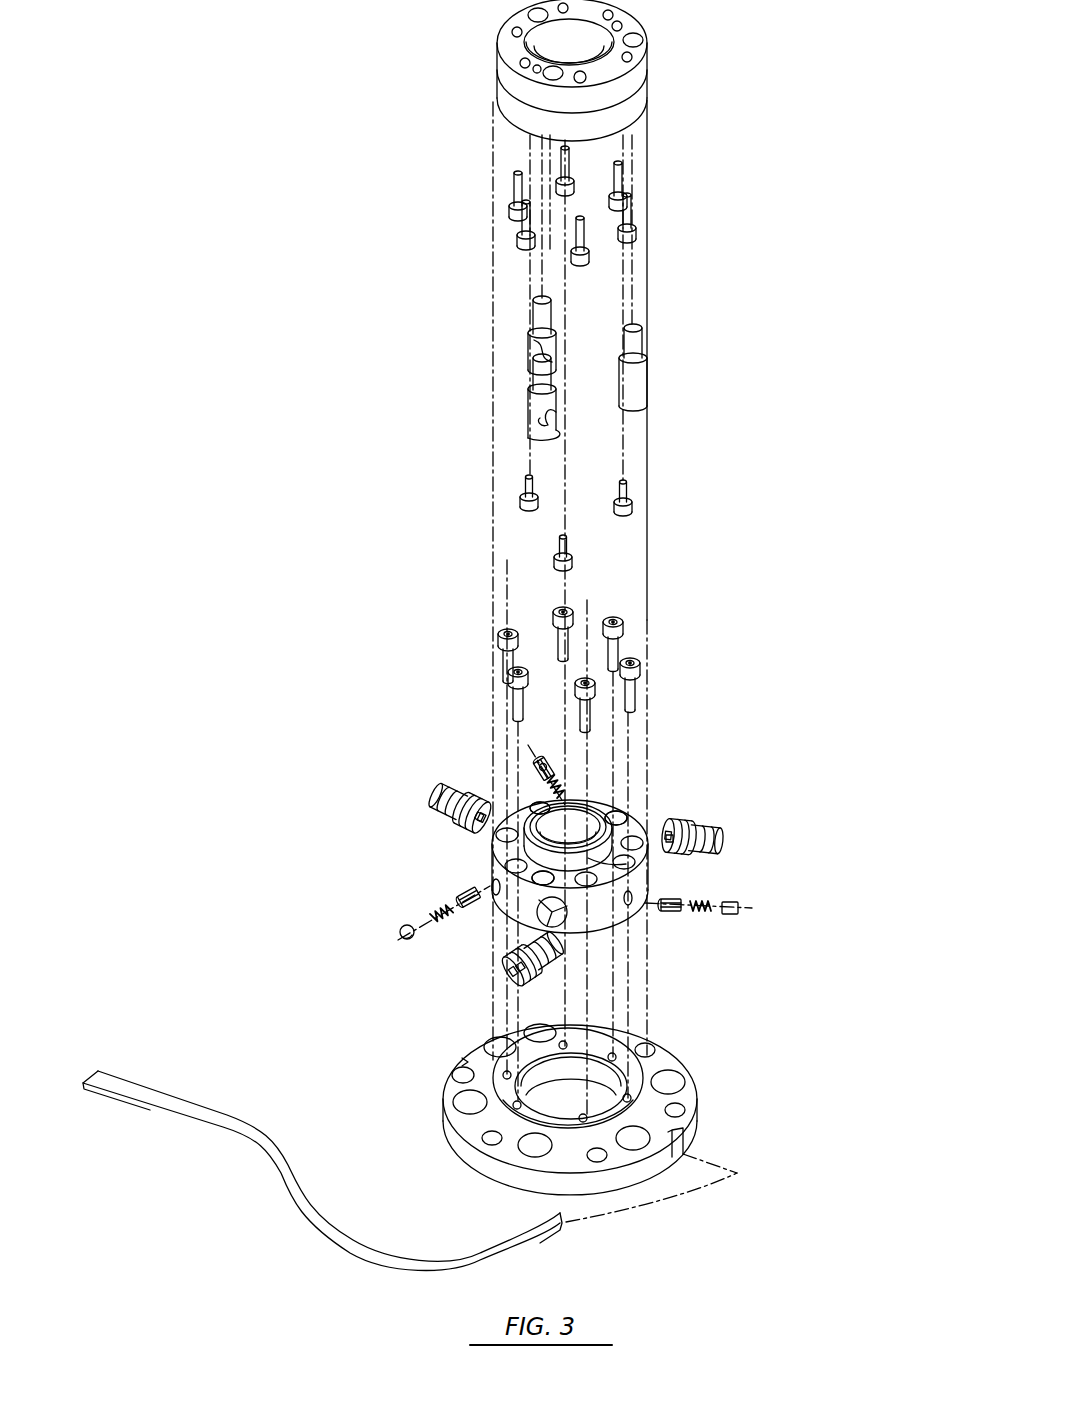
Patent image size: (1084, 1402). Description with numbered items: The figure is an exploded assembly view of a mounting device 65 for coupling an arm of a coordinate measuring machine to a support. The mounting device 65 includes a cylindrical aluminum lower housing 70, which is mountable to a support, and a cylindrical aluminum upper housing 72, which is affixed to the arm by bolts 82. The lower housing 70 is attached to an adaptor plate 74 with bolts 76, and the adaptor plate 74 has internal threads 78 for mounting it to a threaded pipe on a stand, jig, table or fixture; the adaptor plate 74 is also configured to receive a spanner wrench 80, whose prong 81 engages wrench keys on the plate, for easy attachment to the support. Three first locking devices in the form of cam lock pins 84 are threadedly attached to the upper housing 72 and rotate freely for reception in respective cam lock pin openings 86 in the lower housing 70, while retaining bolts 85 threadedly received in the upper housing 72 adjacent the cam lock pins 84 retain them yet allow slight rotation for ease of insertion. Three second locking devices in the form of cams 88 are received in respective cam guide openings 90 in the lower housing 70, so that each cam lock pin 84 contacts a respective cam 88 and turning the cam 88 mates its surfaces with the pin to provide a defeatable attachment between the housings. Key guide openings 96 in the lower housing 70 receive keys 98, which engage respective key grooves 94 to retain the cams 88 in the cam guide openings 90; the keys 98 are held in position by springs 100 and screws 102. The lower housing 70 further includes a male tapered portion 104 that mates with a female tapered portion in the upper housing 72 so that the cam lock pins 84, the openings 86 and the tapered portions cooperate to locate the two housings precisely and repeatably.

The mounting device 65 is at (330, 616).
The lower housing 70 is at (488, 862).
The upper housing 72 is at (657, 67).
The adaptor plate 74 is at (698, 1097).
The bolts 76 is at (607, 622).
The internal threads 78 is at (622, 1073).
The spanner wrench 80 is at (168, 1092).
The prong 81 is at (541, 1210).
The bolts 82 is at (552, 191).
The cam lock pins 84 is at (530, 405).
The retaining bolts 85 is at (545, 528).
The cam lock pin openings 86 is at (536, 805).
The cams 88 is at (438, 790).
The cam guide openings 90 is at (562, 922).
The key grooves 94 is at (462, 818).
The key guide openings 96 is at (492, 886).
The keys 98 is at (460, 896).
The springs 100 is at (433, 916).
The screws 102 is at (403, 938).
The male tapered portion 104 is at (612, 870).